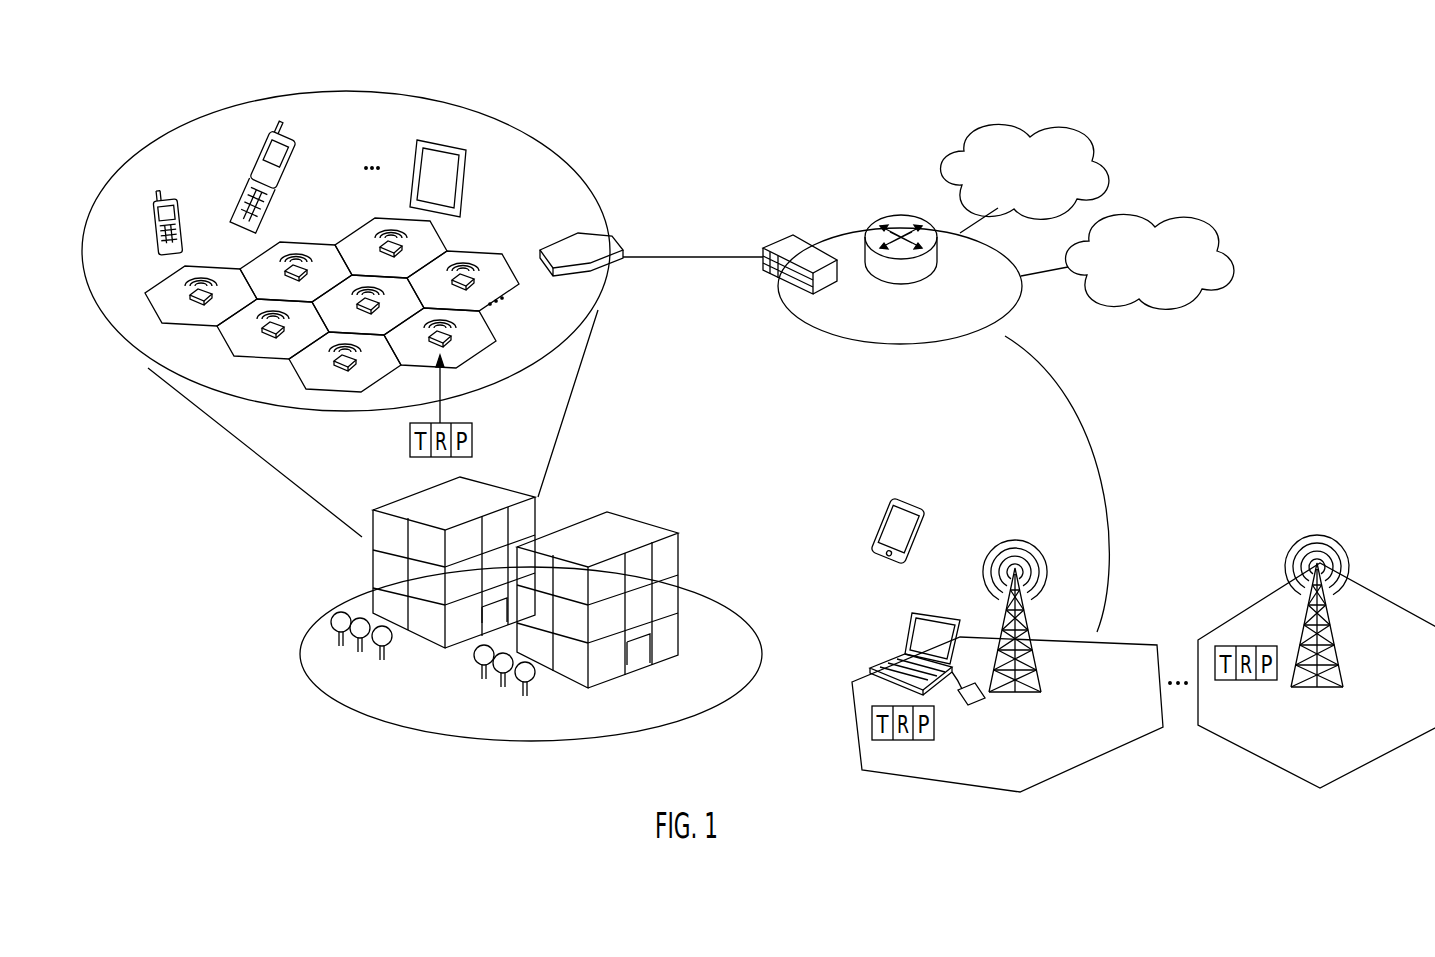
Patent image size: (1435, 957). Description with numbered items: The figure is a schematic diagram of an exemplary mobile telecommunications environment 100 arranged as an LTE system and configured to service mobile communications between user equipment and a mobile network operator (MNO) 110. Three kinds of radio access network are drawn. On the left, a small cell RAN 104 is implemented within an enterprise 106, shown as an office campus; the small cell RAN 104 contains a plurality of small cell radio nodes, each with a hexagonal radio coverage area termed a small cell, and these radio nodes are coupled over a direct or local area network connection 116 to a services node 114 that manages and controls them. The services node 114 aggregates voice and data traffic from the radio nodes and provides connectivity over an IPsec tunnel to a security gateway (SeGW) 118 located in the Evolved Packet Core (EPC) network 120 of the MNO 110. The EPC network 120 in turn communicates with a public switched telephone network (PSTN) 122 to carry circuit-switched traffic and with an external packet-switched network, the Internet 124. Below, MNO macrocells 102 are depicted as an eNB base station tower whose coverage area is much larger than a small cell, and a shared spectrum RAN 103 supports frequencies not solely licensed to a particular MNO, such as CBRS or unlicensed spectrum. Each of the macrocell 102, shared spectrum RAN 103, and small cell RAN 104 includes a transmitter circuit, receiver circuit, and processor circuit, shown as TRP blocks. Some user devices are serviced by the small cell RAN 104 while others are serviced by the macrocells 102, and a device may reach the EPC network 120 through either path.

The mobile telecommunications environment 100 is at (672, 126).
The macrocell radio access network 102 is at (971, 693).
The shared spectrum RAN 103 is at (1316, 661).
The small cell RAN 104 is at (346, 274).
The enterprise environment 106 is at (300, 656).
The mobile network operator 110 is at (900, 279).
The services node 114 is at (612, 236).
The local area network connection 116 is at (527, 253).
The security gateway 118 is at (796, 234).
The Evolved Packet Core network 120 is at (962, 343).
The public switched telephone network 122 is at (1166, 221).
The Internet 124 is at (988, 127).